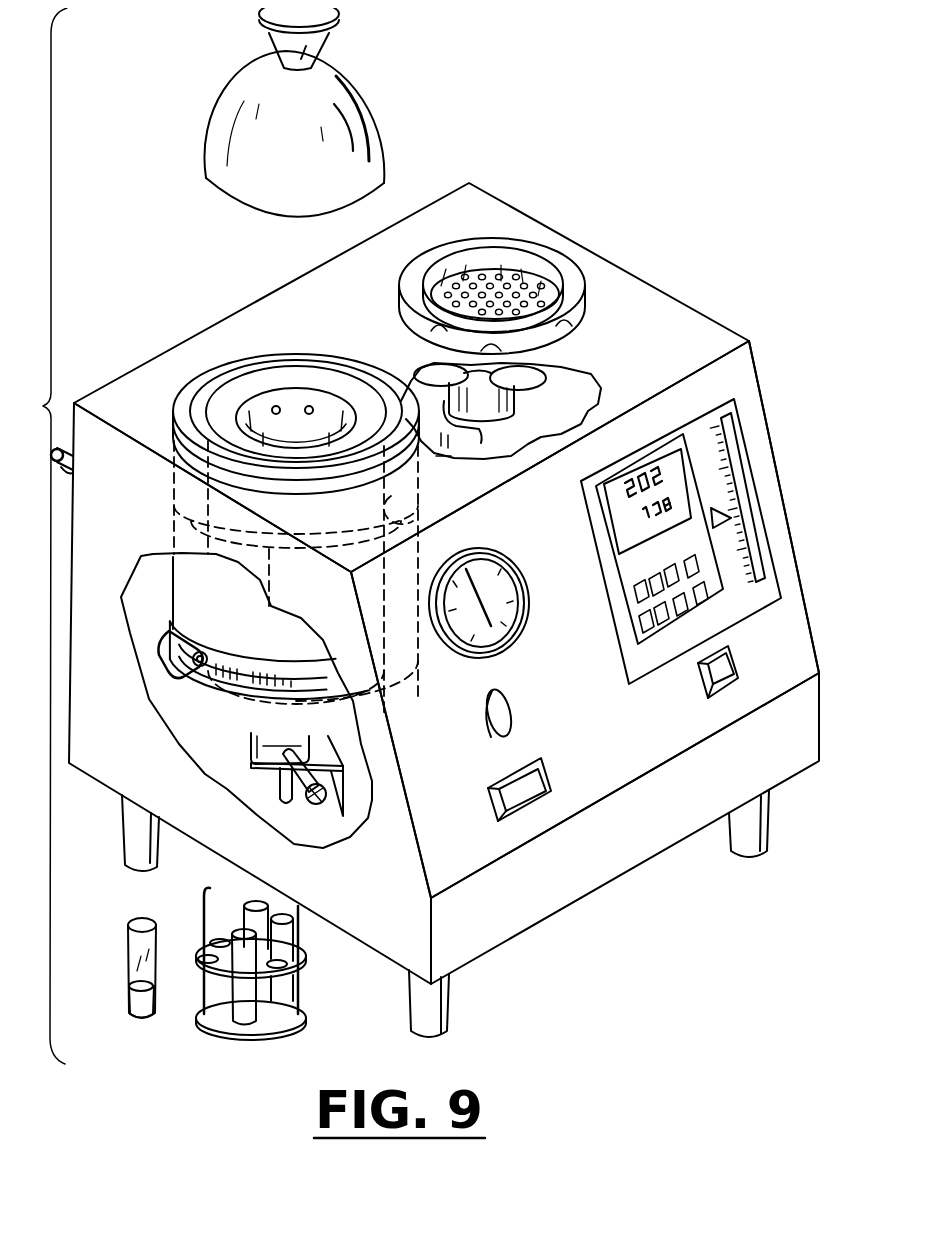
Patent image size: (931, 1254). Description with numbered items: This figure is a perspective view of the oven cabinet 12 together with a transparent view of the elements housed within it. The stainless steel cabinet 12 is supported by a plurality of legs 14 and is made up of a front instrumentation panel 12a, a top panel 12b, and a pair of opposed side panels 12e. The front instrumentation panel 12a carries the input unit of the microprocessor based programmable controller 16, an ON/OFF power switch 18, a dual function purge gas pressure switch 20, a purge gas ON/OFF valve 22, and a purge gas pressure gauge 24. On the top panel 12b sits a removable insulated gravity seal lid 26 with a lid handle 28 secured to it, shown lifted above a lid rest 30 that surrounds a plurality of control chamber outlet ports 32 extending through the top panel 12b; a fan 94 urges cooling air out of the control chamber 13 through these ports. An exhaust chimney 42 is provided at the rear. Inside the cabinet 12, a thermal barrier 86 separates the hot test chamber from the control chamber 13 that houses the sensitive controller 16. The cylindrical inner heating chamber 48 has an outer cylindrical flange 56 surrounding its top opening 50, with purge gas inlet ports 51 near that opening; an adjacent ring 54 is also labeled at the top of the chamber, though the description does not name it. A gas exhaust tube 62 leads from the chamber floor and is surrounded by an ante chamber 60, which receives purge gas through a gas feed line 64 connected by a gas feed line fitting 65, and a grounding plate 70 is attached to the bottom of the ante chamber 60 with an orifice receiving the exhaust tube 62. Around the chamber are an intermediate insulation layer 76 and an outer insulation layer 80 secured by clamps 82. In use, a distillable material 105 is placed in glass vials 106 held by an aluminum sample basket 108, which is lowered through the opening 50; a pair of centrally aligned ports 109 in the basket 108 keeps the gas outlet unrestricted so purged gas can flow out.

The cabinet 12 is at (669, 300).
The front instrumentation panel 12a is at (637, 730).
The top panel 12b is at (657, 350).
The side panels 12e is at (124, 555).
The control chamber 13 is at (561, 403).
The legs 14 is at (448, 1005).
The programmable controller 16 is at (745, 433).
The ON/OFF power switch 18 is at (735, 655).
The dual function purge gas pressure switch 20 is at (545, 768).
The purge gas ON/OFF valve 22 is at (506, 702).
The purge gas pressure gauge 24 is at (488, 551).
The removable insulated gravity seal lid 26 is at (375, 107).
The lid handle 28 is at (338, 12).
The lid rest 30 is at (572, 265).
The control chamber outlet ports 32 is at (470, 270).
The exhaust chimney 42 is at (62, 474).
The inner heating chamber 48 is at (333, 396).
The top opening 50 is at (310, 404).
The purge gas inlet ports 51 is at (276, 404).
The ring 54 is at (267, 392).
The outer cylindrical flange 56 is at (228, 401).
The ante chamber 60 is at (250, 745).
The gas exhaust tube 62 is at (279, 780).
The gas feed line 64 is at (295, 794).
The gas feed line fitting 65 is at (318, 797).
The grounding plate 70 is at (349, 795).
The intermediate insulation layer 76 is at (200, 425).
The outer insulation layer 80 is at (195, 693).
The clamps 82 is at (273, 660).
The thermal barrier 86 is at (478, 432).
The fan 94 is at (528, 388).
The distillable material 105 is at (126, 1003).
The glass vials 106 is at (125, 952).
The aluminum sample basket 108 is at (300, 952).
The centrally aligned ports 109 is at (266, 978).